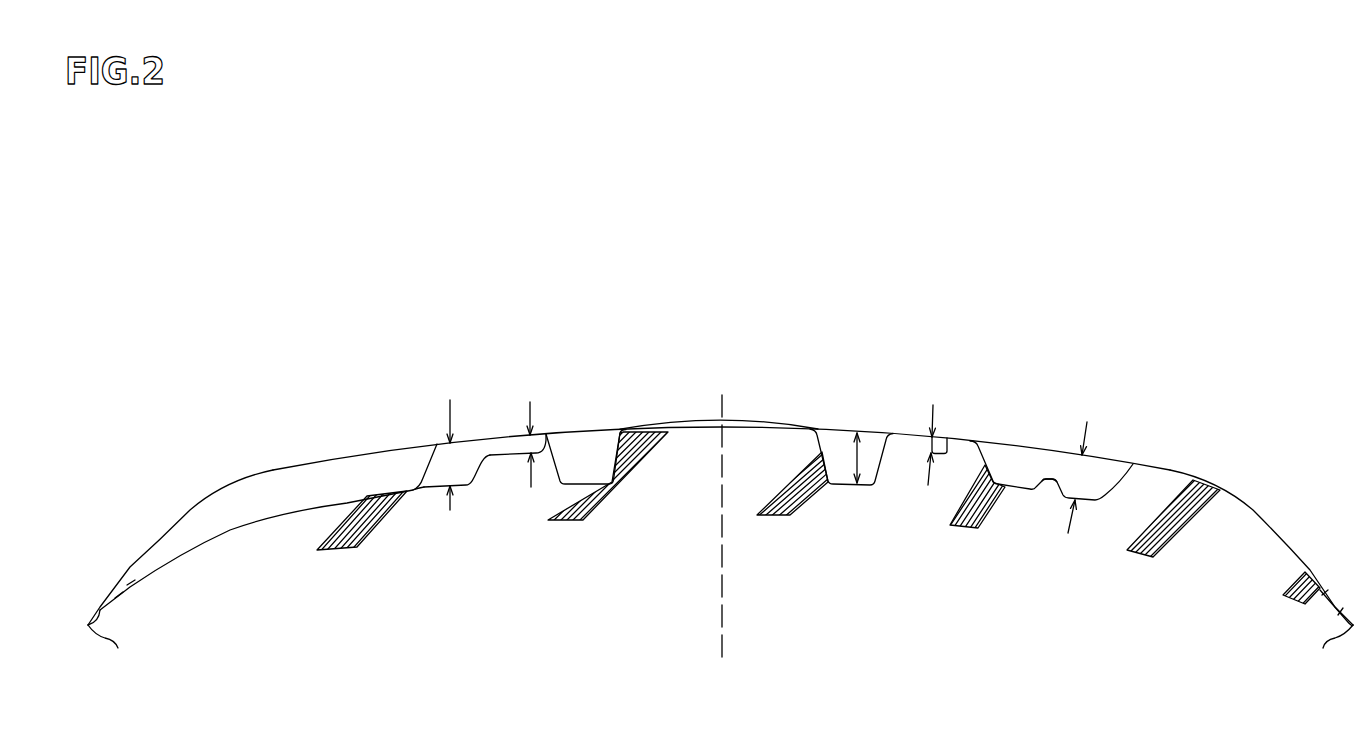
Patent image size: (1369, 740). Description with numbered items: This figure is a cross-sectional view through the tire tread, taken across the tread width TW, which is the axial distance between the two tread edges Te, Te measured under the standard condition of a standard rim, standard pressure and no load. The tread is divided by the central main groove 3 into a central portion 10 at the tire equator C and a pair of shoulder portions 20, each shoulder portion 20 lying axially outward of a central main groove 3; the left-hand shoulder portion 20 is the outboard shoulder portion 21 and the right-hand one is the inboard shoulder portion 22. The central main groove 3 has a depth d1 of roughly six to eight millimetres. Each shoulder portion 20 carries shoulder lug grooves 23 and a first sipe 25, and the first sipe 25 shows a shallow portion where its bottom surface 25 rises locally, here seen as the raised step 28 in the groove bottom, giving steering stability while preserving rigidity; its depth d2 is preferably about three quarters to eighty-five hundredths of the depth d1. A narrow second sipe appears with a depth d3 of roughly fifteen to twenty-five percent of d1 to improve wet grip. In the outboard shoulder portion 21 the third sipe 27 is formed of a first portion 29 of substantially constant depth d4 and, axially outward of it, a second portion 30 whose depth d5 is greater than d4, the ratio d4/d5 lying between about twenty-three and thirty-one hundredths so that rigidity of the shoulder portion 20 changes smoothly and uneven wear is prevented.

The central portion 10 is at (733, 425).
The central main groove 3 is at (587, 473).
The shoulder portion 20 is at (745, 427).
The outboard shoulder portion 21 is at (467, 368).
The inboard shoulder portion 22 is at (1020, 433).
The shoulder lug groove 23 is at (373, 477).
The first sipe 25 is at (1028, 486).
The third sipe 27 is at (501, 368).
The protrusion 28 is at (1050, 477).
The first portion 29 is at (510, 450).
The second portion 30 is at (468, 470).
The tread width TW is at (1168, 468).
The tread edge Te is at (273, 470).
The tire equator C is at (720, 512).
The depth of the central main groove d1 is at (860, 458).
The depth of the first sipe d2 is at (1080, 478).
The depth of the second sipe d3 is at (932, 447).
The depth of the first portion d4 is at (533, 440).
The depth of the second portion d5 is at (455, 470).